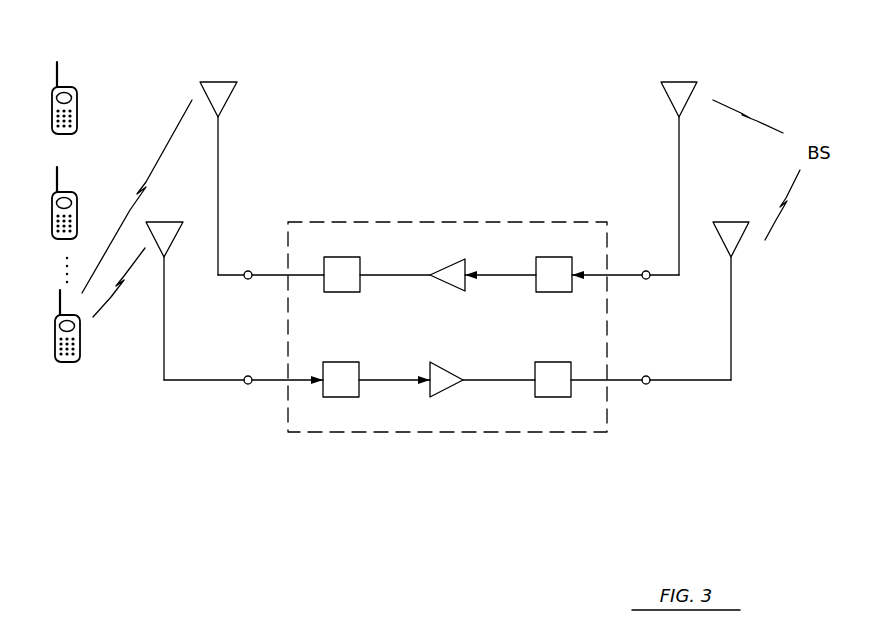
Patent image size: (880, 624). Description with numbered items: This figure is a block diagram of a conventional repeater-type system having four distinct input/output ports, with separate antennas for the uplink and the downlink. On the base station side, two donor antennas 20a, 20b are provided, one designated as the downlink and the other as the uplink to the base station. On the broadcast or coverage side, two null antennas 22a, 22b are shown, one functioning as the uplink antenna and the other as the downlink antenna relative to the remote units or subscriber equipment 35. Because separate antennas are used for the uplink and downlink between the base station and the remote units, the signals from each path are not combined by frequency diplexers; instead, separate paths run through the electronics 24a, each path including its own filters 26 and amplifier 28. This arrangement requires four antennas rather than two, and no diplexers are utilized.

The remote units or subscriber equipment 35 is at (70, 86).
The null antenna 22a is at (230, 82).
The null antenna 22b is at (170, 250).
The donor antenna 20a is at (678, 82).
The donor antenna 20b is at (724, 222).
The electronics 24a is at (612, 427).
The filters 26 is at (343, 257).
The amplifier 28 is at (458, 259).